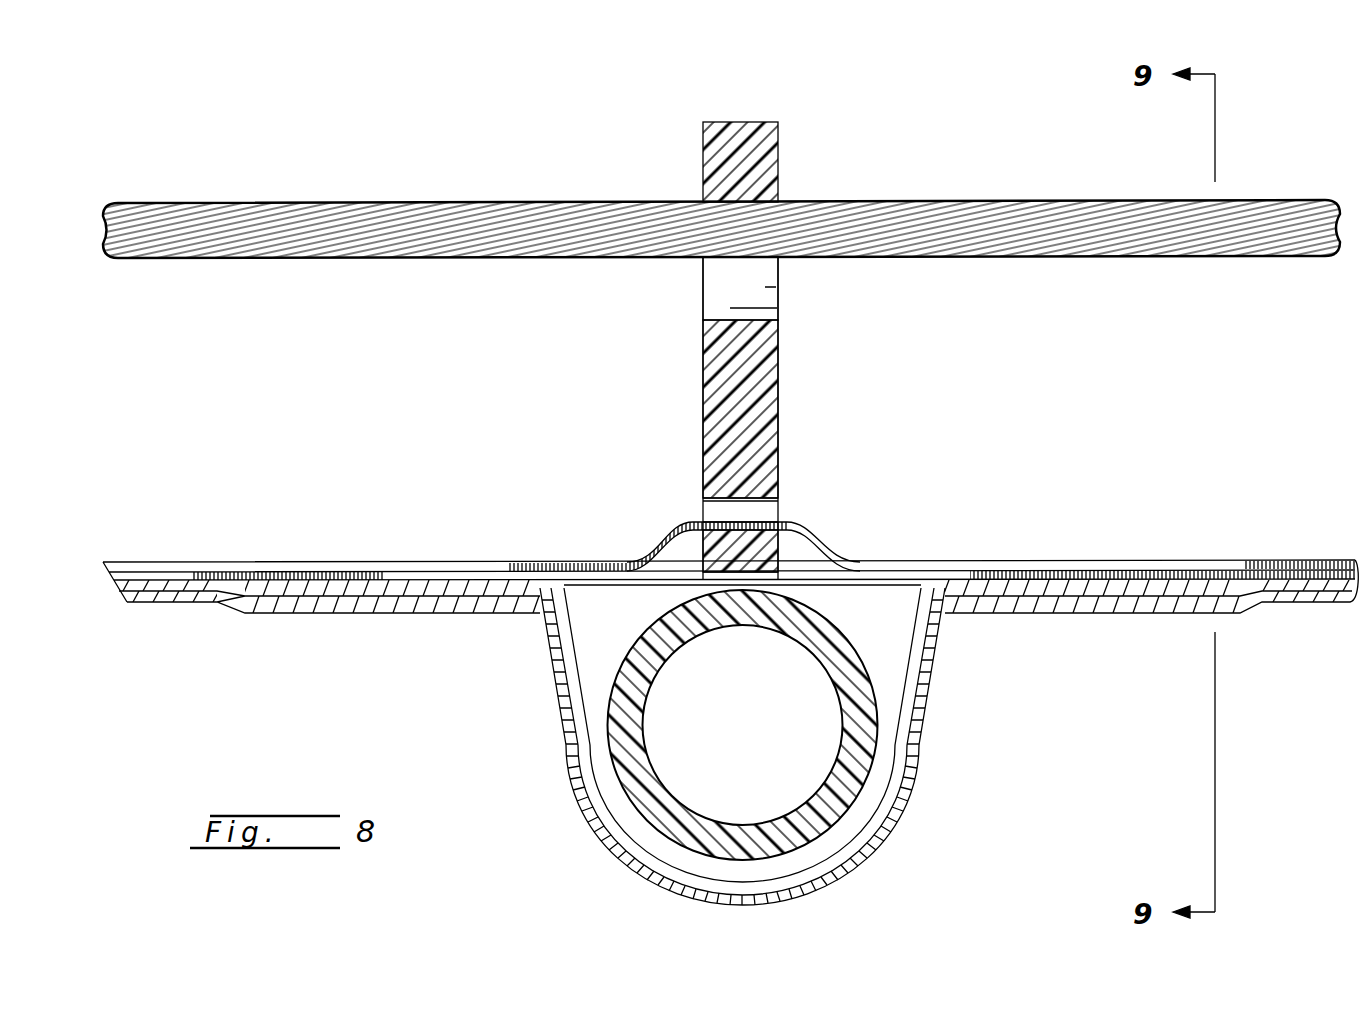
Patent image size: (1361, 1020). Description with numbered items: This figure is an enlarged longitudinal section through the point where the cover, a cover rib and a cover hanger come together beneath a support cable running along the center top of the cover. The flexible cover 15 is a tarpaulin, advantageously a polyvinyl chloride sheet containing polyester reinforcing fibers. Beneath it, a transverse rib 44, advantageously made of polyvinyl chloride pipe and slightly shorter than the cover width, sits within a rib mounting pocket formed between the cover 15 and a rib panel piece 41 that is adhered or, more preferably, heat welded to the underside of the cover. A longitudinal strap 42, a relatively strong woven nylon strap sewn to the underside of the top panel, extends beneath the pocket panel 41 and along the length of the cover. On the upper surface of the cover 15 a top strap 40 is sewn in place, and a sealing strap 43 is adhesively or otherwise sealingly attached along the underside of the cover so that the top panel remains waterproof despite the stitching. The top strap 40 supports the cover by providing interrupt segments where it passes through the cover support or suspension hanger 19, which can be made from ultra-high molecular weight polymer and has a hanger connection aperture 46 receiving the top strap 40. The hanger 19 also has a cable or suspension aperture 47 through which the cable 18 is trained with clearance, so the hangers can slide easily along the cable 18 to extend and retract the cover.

The flexible cover 15 is at (893, 572).
The cable 18 is at (1108, 233).
The cover support or suspension hanger 19 is at (742, 420).
The top strap 40 is at (402, 568).
The rib panel piece 41 is at (912, 632).
The longitudinal strap 42 is at (1090, 614).
The sealing strap 43 is at (565, 740).
The transverse rib 44 is at (665, 812).
The hanger connection aperture 46 is at (696, 510).
The cable or suspension aperture 47 is at (696, 287).